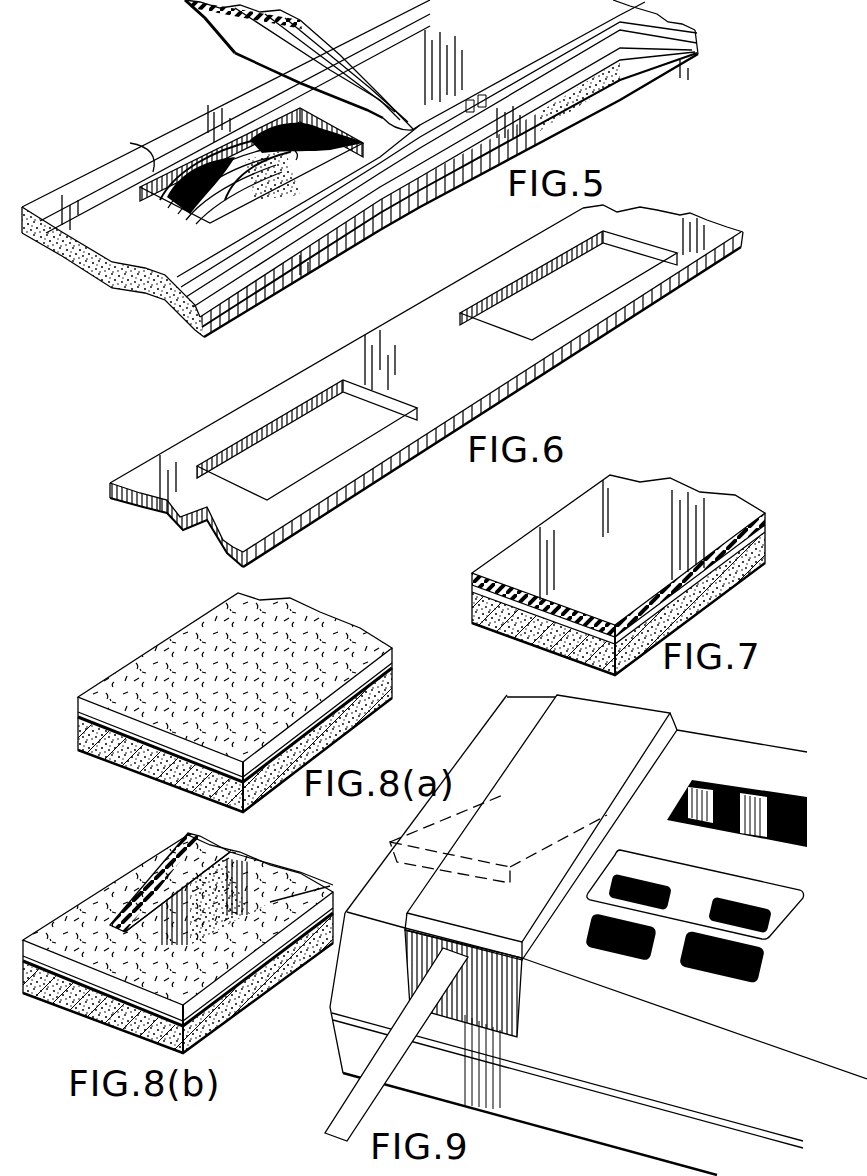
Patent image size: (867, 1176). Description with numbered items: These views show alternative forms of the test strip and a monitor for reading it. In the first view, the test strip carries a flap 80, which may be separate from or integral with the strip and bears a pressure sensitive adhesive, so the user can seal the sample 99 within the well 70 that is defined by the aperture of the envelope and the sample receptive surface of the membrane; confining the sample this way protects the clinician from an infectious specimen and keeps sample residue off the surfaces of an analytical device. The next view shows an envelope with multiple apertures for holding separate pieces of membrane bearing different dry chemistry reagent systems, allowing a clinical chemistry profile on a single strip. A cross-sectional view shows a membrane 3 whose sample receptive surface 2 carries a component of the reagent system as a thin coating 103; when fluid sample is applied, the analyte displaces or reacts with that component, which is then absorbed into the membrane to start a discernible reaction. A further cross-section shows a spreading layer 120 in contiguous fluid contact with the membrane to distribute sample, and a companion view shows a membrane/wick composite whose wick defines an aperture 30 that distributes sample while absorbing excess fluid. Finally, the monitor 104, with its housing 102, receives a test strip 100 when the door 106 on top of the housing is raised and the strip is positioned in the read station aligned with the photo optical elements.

In FIG. 5, the well 70 is at (158, 165).
In FIG. 5, the flap 80 is at (247, 37).
In FIG. 5, the sample 99 is at (197, 176).
In FIG. 7, the coating 103 is at (522, 548).
In FIG. 7, the sample receptive surface 2 is at (697, 607).
In FIG. 7, the membrane 3 is at (504, 633).
In FIG. 8a, the membrane 3 is at (79, 732).
In FIG. 8b, the membrane 3 is at (80, 1007).
In FIG. 8a, the porous layer 120 is at (132, 669).
In FIG. 8b, the porous layer 120 is at (98, 900).
In FIG. 8b, the channel 30 is at (267, 880).
In FIG. 9, the meter housing 102 is at (628, 722).
In FIG. 9, the door 106 is at (499, 914).
In FIG. 9, the monitor 104 is at (326, 1062).
In FIG. 9, the test strip 100 is at (337, 1120).